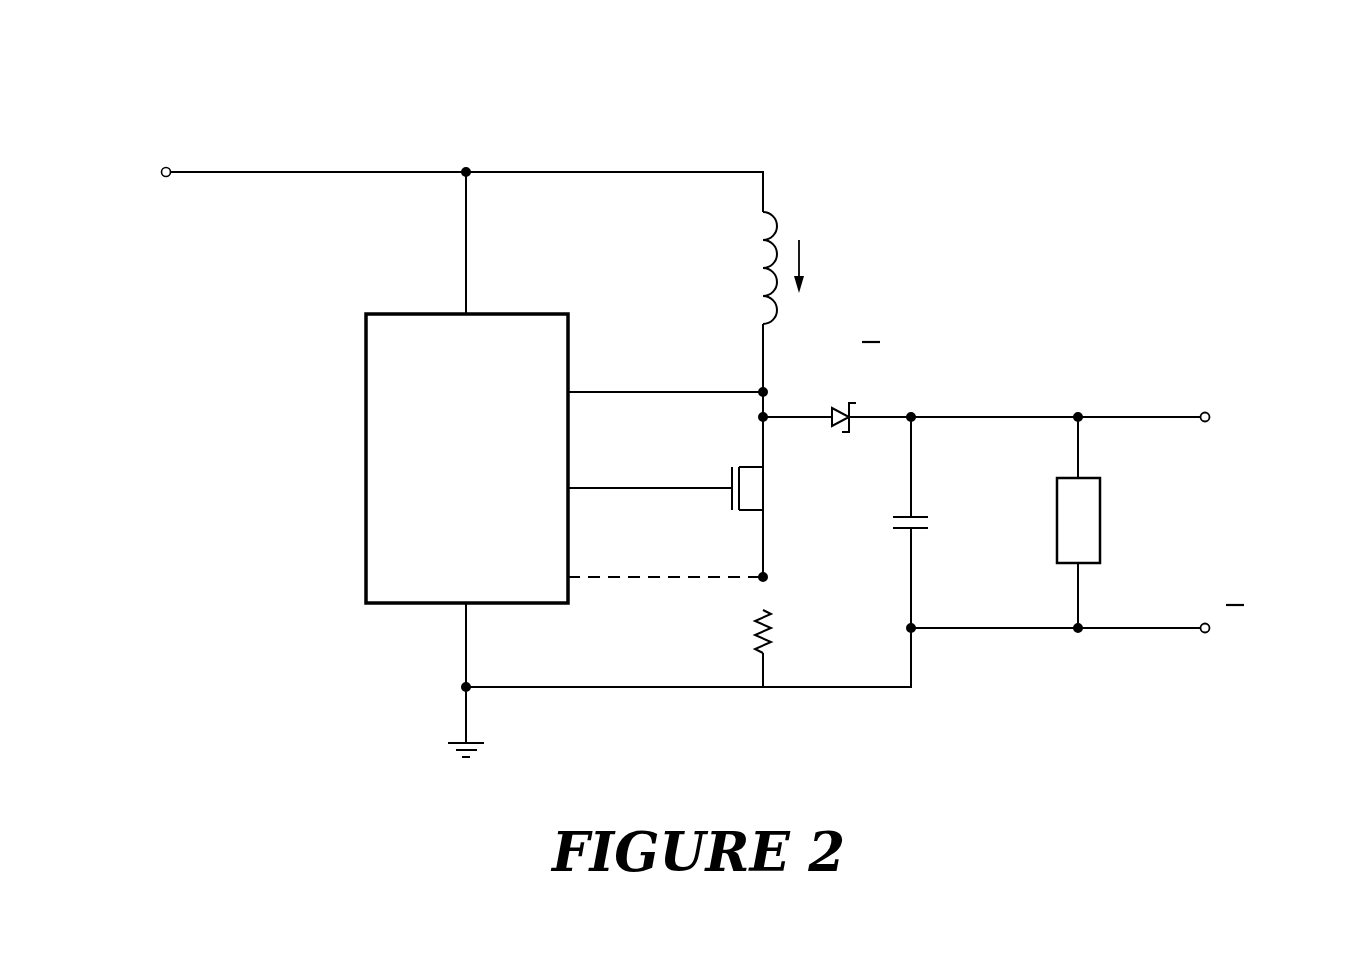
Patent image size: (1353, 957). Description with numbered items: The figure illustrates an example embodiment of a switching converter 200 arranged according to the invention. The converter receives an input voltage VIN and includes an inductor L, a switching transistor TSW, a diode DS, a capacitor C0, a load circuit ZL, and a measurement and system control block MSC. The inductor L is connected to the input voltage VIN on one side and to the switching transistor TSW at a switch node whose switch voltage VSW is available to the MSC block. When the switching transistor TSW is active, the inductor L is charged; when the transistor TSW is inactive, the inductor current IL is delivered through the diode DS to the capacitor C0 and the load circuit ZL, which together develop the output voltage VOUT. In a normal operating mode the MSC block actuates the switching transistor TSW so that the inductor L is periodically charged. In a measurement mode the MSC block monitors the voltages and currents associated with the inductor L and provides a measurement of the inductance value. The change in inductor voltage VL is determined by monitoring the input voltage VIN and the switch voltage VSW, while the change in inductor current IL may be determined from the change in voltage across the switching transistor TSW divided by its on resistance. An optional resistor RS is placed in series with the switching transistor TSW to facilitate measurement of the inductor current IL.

The switching converter 200 is at (1244, 116).
The input voltage VIN is at (433, 186).
The measurement and system control block MSC is at (467, 458).
The inductor L is at (756, 268).
The inductor current IL is at (818, 267).
The inductor voltage VL is at (912, 259).
The switch voltage VSW is at (667, 364).
The switching transistor TSW is at (697, 489).
The resistor RS is at (784, 633).
The diode DS is at (832, 398).
The capacitor C0 is at (934, 485).
The load circuit ZL is at (1102, 522).
The output voltage VOUT is at (1270, 523).